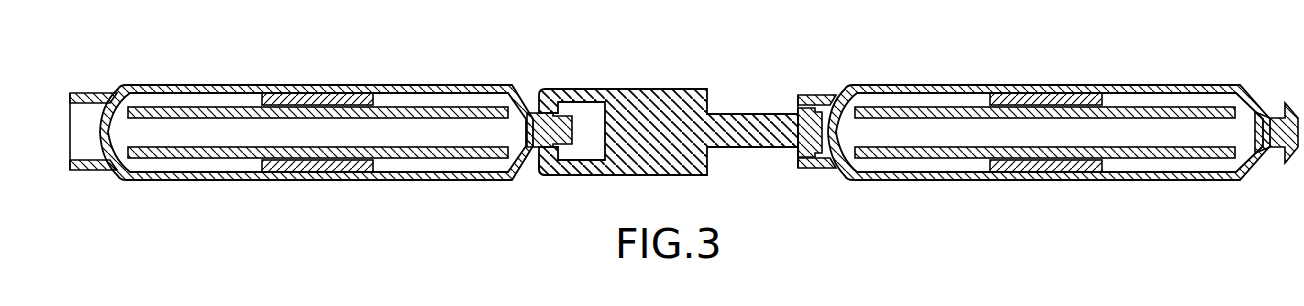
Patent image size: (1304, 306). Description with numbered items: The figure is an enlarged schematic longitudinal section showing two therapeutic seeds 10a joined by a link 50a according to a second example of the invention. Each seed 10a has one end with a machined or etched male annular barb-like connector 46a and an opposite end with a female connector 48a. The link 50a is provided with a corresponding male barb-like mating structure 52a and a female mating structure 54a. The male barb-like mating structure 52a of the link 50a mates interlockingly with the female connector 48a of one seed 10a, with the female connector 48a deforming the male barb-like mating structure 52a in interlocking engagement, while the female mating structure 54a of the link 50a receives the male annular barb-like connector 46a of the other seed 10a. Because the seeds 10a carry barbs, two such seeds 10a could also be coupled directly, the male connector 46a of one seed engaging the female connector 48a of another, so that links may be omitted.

The seed 10a is at (297, 84).
The male annular barb-like connector 46a is at (541, 120).
The female connector 48a is at (93, 97).
The link 50a is at (650, 107).
The male barb-like mating structure 52a is at (812, 137).
The female mating structure 54a is at (570, 174).